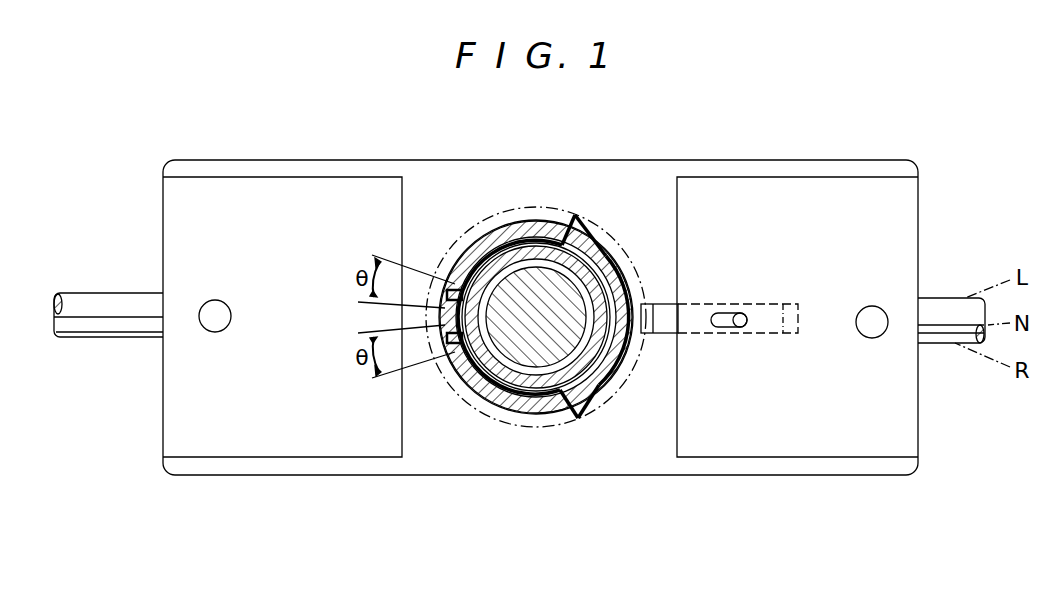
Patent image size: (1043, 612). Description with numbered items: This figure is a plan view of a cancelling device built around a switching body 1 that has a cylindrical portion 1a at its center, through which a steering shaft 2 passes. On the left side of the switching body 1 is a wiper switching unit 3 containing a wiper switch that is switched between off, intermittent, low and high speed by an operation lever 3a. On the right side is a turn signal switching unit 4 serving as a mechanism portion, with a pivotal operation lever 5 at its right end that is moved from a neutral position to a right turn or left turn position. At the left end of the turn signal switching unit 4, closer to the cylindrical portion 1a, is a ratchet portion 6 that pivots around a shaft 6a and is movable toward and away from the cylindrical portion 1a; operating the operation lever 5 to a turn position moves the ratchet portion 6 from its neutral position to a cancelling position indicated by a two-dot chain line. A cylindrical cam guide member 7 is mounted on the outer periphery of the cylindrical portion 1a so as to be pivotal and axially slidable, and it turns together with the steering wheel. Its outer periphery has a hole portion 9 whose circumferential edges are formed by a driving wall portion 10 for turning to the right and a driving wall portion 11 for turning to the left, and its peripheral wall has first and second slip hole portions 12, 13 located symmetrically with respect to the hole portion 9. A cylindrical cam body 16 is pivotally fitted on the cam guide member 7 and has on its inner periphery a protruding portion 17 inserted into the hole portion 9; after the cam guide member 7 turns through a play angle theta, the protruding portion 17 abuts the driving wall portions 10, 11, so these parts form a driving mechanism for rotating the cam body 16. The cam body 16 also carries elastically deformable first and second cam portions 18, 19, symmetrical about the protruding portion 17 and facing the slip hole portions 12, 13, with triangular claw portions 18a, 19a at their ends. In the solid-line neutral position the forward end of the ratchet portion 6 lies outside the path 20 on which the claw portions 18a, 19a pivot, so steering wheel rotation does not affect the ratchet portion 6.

The switching body 1 is at (455, 460).
The cylindrical portion 1a is at (528, 395).
The steering shaft 2 is at (515, 240).
The wiper switching unit 3 is at (256, 190).
The operation lever 3a is at (108, 300).
The turn signal switching unit 4 is at (868, 190).
The operation lever 5 is at (938, 300).
The ratchet portion 6 is at (644, 300).
The shaft 6a is at (744, 313).
The cam guide member 7 is at (622, 245).
The hole portion 9 is at (456, 262).
The driving wall portion 10 is at (442, 352).
The driving wall portion 11 is at (470, 250).
The first slip hole portion 12 is at (582, 228).
The second slip hole portion 13 is at (555, 412).
The cylindrical cam body 16 is at (627, 373).
The protruding portion 17 is at (447, 290).
The first cam portion 18 is at (560, 240).
The claw portion 18a is at (578, 218).
The second cam portion 19 is at (505, 412).
The claw portion 19a is at (583, 412).
The path 20 is at (530, 208).